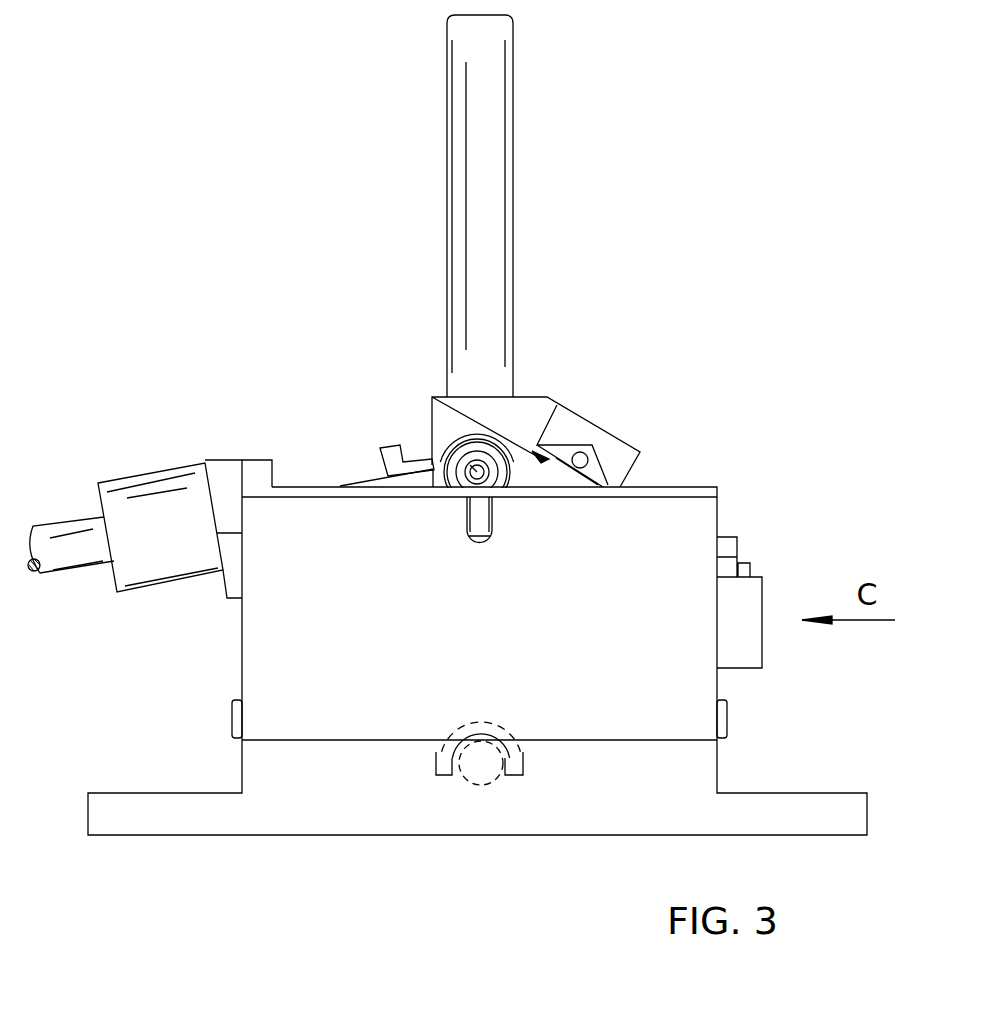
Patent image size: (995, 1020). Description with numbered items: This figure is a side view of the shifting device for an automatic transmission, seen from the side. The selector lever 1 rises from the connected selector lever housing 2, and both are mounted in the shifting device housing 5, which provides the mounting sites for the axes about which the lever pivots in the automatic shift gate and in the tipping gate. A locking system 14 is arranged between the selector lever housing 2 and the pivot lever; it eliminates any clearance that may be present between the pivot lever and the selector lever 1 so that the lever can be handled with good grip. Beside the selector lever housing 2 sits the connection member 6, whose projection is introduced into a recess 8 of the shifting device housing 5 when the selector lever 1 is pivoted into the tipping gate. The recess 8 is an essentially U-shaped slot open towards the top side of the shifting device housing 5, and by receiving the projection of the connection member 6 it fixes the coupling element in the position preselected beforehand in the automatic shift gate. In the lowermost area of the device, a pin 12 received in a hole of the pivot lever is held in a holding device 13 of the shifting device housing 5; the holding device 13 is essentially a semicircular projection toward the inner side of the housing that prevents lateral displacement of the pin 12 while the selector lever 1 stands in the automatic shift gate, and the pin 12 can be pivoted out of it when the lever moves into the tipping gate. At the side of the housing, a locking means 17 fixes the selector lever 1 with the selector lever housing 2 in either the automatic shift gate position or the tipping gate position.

The selector lever 1 is at (490, 243).
The selector lever housing 2 is at (520, 410).
The locking system 14 is at (447, 397).
The connection member 6 is at (450, 465).
The shifting device housing 5 is at (305, 670).
The recess 8 is at (482, 522).
The locking means 17 is at (755, 533).
The pin 12 is at (481, 765).
The holding device 13 is at (437, 763).